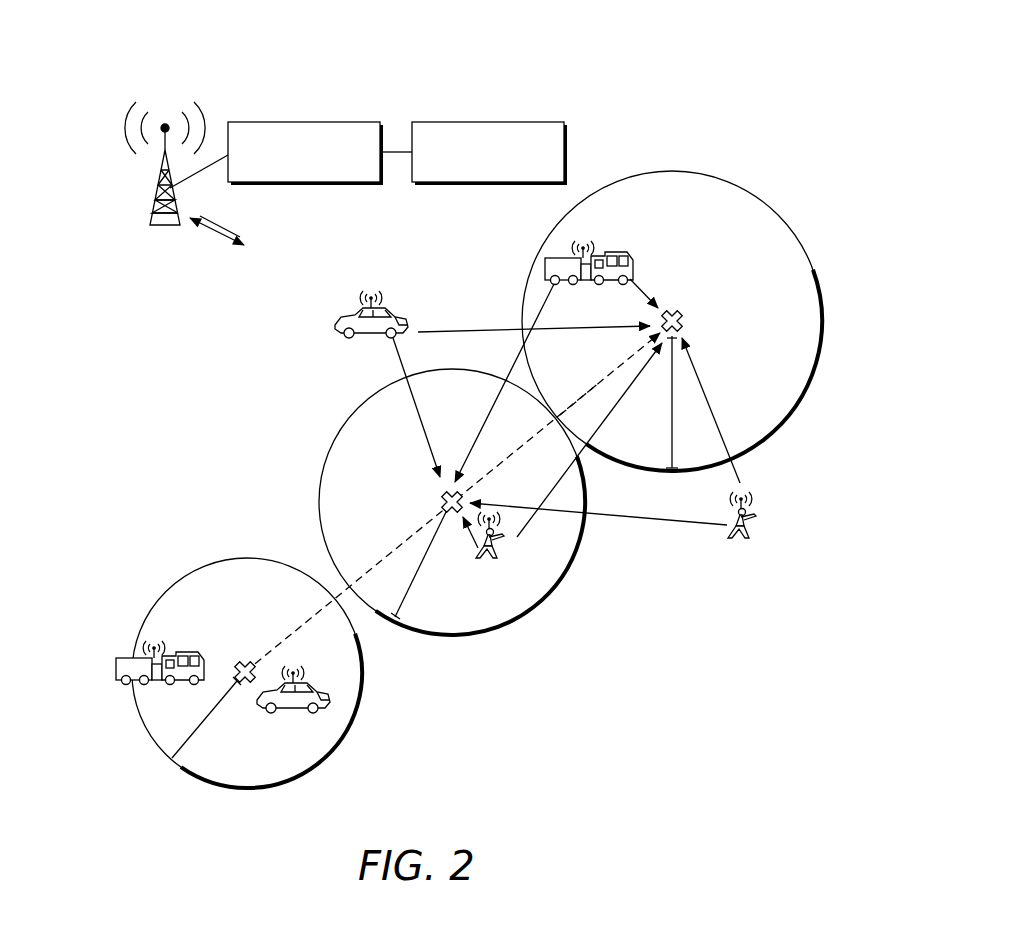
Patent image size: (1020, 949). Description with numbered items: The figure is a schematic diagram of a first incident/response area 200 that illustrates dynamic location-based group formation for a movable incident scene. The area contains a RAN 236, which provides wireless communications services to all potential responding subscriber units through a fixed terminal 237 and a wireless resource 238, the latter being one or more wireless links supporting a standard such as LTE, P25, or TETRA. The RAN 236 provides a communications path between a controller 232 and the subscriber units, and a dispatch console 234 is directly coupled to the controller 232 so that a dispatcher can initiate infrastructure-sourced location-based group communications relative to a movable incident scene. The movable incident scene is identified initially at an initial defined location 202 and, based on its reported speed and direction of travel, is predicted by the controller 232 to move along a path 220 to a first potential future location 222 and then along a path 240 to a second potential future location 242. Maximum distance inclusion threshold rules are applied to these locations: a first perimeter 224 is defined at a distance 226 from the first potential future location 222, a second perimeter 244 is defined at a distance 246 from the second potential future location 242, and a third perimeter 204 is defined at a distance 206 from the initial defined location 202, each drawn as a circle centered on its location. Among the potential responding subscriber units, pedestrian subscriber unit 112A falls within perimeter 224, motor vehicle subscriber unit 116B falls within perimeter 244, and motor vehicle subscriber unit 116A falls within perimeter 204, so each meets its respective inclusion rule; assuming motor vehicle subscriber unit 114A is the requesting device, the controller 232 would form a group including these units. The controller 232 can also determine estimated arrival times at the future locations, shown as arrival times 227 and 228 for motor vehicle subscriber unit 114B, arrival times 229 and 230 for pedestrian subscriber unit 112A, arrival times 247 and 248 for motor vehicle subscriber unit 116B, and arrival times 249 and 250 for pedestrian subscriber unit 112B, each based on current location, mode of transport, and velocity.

The first incident/response area 200 is at (130, 50).
The initial defined location 202 is at (240, 660).
The third perimeter 204 is at (246, 558).
The distance 206 is at (205, 720).
The pedestrian potential responding SU 112A is at (508, 563).
The pedestrian potential responding SU 112B is at (752, 543).
The motor vehicle potential responding SU 114A is at (286, 710).
The motor vehicle potential responding SU 114B is at (332, 316).
The motor vehicle potential responding SU 116A is at (171, 682).
The motor vehicle potential responding SU 116B is at (612, 282).
The path 220 is at (412, 538).
The first potential future location 222 is at (440, 494).
The first perimeter 224 is at (355, 412).
The distance 226 is at (411, 585).
The estimated arrival time 227 is at (422, 422).
The estimated arrival time 228 is at (478, 328).
The estimated arrival time 229 is at (470, 536).
The estimated arrival time 230 is at (617, 408).
The controller 232 is at (303, 122).
The dispatch console 234 is at (488, 122).
The RAN 236 is at (116, 236).
The fixed terminal 237 is at (163, 180).
The wireless resource 238 is at (210, 232).
The path 240 is at (617, 365).
The second potential future location 242 is at (684, 312).
The second perimeter 244 is at (676, 172).
The distance 246 is at (673, 422).
The estimated arrival time 247 is at (645, 285).
The estimated arrival time 248 is at (513, 366).
The estimated arrival time 249 is at (712, 403).
The estimated arrival time 250 is at (672, 518).